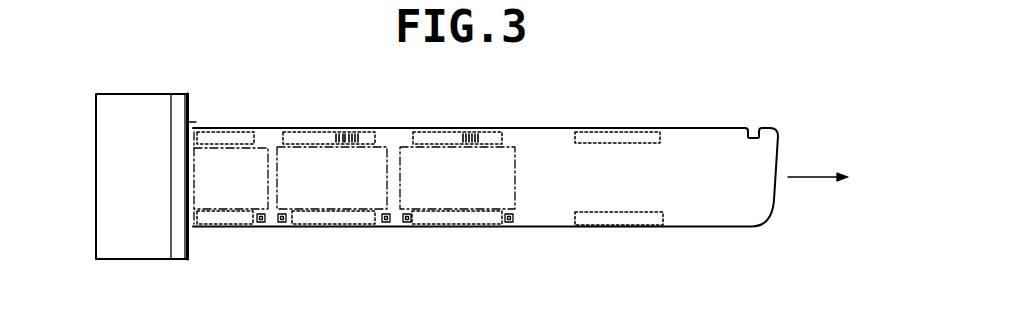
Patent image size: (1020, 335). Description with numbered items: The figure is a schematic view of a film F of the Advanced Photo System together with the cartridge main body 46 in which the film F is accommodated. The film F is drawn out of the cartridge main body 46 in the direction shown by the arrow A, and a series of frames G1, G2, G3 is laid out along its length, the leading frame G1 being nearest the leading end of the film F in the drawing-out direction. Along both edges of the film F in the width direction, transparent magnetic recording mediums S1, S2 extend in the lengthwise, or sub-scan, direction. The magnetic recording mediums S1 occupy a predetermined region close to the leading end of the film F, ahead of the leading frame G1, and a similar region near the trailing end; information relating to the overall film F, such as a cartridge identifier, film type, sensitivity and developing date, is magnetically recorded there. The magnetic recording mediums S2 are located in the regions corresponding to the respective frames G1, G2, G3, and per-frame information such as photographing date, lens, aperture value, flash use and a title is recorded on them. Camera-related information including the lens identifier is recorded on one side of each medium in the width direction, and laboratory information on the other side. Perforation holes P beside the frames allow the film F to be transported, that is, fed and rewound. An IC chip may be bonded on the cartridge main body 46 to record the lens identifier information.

The cartridge main body 46 is at (158, 122).
The film F is at (696, 195).
The arrow A is at (818, 163).
The leading frame G1 is at (493, 168).
The frame G2 is at (367, 170).
The frame G3 is at (247, 167).
The magnetic recording medium S1 is at (593, 130).
The magnetic recording medium S2 is at (198, 131).
The perforation holes P is at (261, 224).